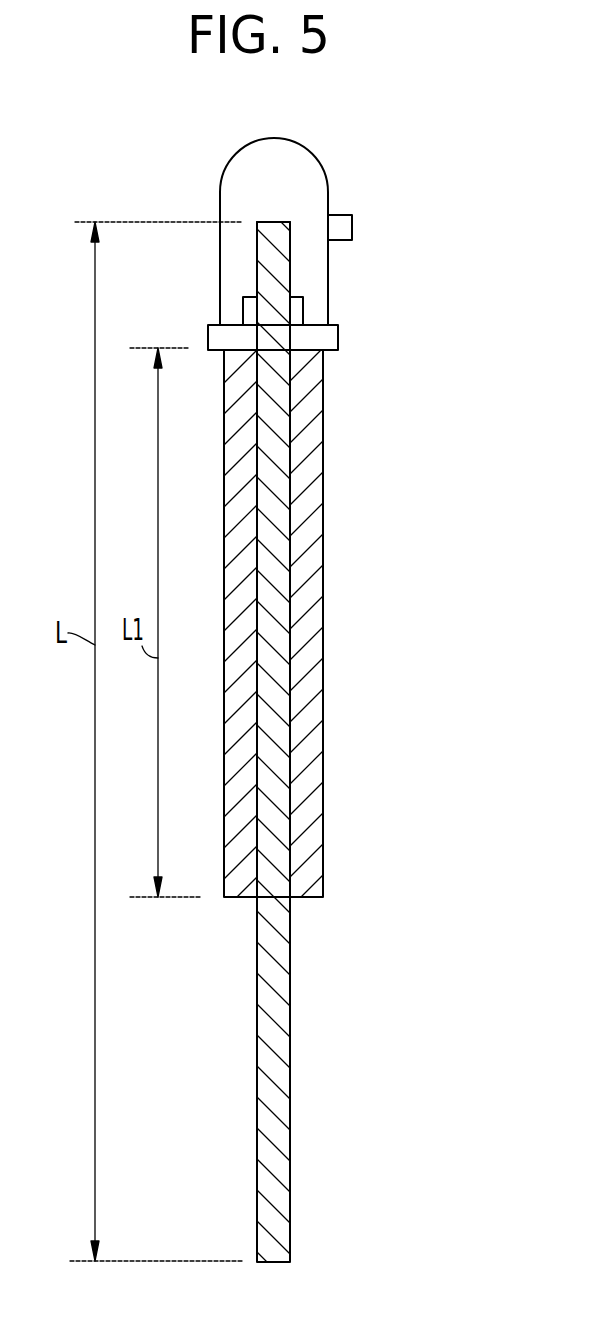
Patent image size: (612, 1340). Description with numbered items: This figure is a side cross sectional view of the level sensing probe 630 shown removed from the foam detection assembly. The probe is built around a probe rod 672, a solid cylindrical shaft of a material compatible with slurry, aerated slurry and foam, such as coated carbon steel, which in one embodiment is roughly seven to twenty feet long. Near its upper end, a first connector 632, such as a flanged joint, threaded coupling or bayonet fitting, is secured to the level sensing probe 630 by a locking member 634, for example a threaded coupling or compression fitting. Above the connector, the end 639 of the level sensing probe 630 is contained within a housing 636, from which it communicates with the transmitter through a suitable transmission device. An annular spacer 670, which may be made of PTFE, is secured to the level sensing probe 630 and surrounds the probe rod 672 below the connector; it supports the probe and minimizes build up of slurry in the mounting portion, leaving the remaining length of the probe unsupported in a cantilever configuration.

The level sensing probe 630 is at (285, 498).
The first connector 632 is at (338, 337).
The locking member 634 is at (252, 308).
The housing 636 is at (323, 165).
The end of the level sensing probe 639 is at (280, 223).
The annular spacer 670 is at (308, 604).
The probe rod 672 is at (290, 977).